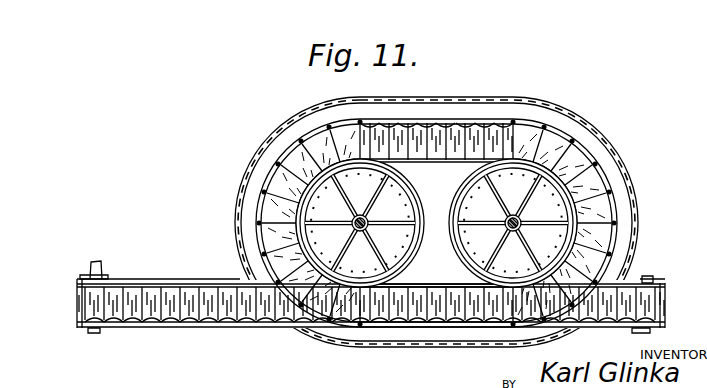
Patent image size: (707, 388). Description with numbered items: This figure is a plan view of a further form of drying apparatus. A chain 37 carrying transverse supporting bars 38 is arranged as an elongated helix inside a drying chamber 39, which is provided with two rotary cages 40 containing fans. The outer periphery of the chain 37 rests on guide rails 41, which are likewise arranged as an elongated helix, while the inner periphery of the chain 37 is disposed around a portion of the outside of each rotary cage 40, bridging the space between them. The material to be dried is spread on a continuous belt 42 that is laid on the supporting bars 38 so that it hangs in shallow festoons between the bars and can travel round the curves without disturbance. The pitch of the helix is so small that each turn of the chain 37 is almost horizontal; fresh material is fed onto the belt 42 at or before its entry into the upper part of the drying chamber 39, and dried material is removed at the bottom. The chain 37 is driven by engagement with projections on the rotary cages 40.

The chain 37 is at (226, 282).
The transverse supporting bars 38 is at (553, 138).
The drying chamber 39 is at (297, 117).
The rotary cages 40 is at (457, 193).
The guide rails 41 is at (398, 120).
The continuous belt 42 is at (588, 188).